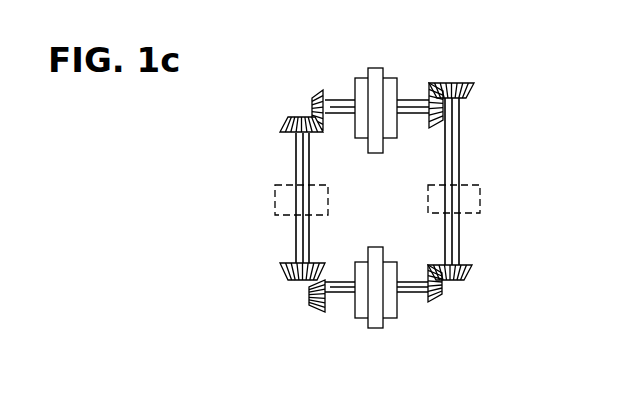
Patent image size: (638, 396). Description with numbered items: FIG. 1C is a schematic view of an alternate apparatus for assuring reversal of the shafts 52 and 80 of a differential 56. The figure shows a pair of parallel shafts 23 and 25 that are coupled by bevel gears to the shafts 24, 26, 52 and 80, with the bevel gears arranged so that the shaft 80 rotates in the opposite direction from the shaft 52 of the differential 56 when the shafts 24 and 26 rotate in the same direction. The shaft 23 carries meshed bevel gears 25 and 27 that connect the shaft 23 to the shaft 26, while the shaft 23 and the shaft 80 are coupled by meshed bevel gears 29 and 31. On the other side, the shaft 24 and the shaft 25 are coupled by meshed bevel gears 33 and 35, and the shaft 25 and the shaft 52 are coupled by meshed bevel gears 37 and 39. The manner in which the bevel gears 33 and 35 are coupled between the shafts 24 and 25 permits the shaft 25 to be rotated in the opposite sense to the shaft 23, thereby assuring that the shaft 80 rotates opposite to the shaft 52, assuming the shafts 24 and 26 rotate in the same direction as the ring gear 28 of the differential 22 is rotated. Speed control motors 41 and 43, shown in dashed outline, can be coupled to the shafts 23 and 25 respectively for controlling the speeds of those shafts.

The differential 22 is at (385, 69).
The shaft 23 is at (296, 242).
The shaft 24 is at (413, 100).
The shaft 25 is at (282, 121).
The shaft 26 is at (338, 100).
The bevel gear 27 is at (310, 103).
The ring gear 28 is at (370, 68).
The bevel gear 29 is at (290, 278).
The bevel gear 31 is at (312, 303).
The bevel gear 33 is at (436, 126).
The bevel gear 35 is at (472, 84).
The bevel gear 37 is at (437, 305).
The bevel gear 39 is at (462, 276).
The speed control motor 41 is at (275, 188).
The speed control motor 43 is at (483, 198).
The shaft 52 is at (408, 283).
The differential 56 is at (359, 319).
The shaft 80 is at (338, 281).